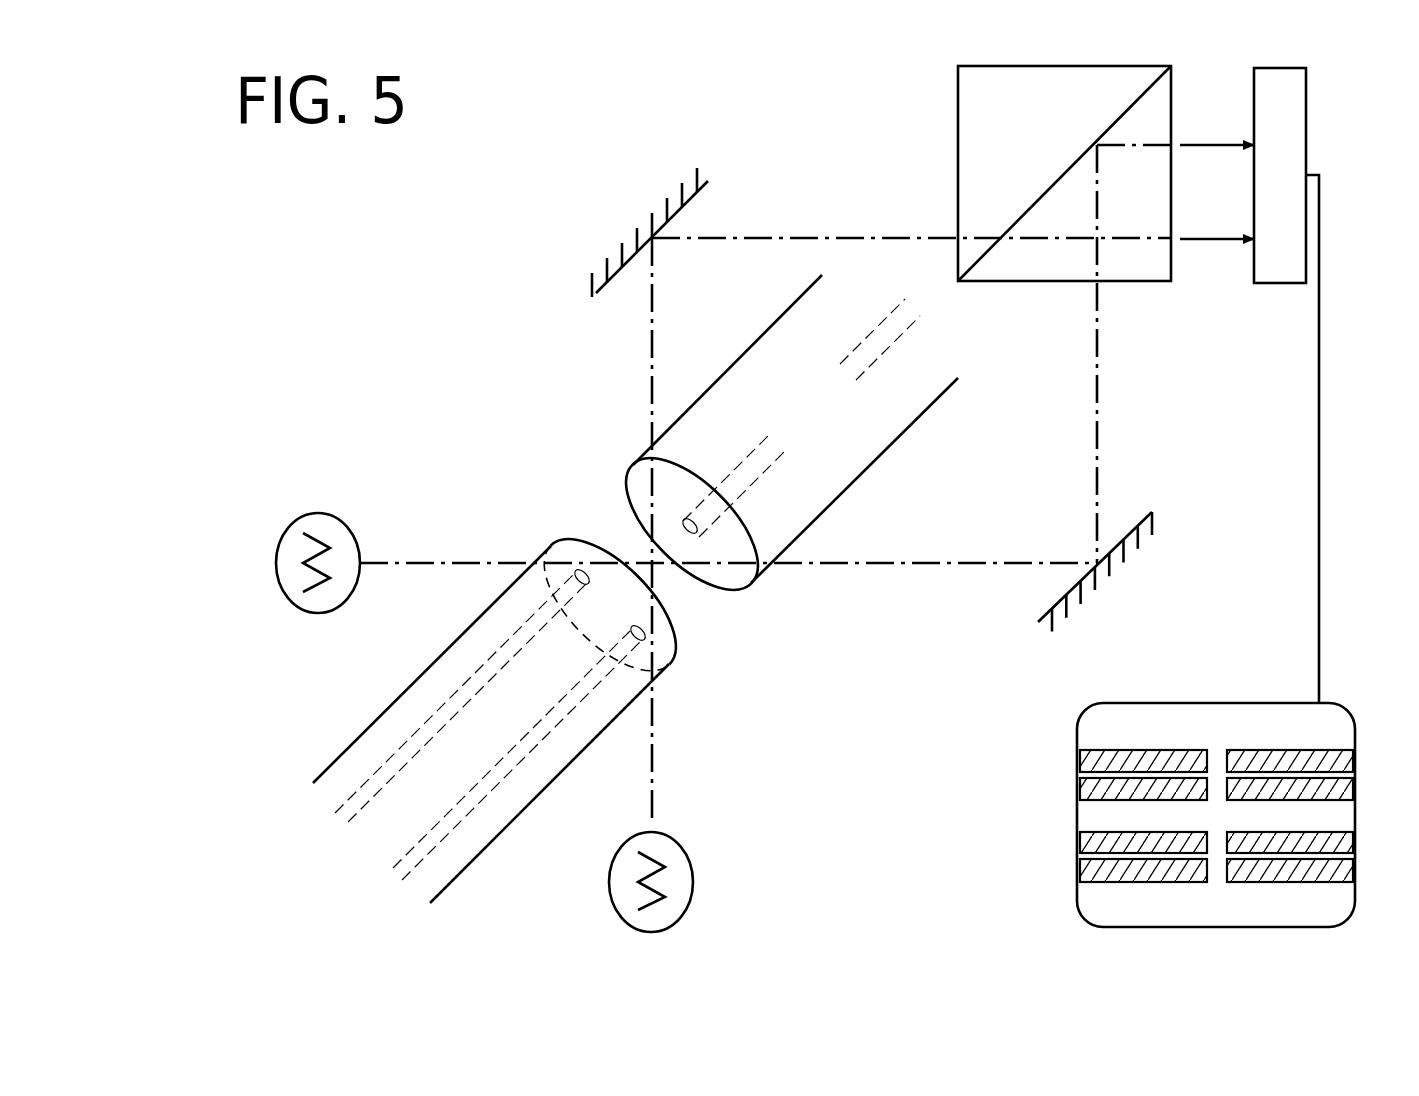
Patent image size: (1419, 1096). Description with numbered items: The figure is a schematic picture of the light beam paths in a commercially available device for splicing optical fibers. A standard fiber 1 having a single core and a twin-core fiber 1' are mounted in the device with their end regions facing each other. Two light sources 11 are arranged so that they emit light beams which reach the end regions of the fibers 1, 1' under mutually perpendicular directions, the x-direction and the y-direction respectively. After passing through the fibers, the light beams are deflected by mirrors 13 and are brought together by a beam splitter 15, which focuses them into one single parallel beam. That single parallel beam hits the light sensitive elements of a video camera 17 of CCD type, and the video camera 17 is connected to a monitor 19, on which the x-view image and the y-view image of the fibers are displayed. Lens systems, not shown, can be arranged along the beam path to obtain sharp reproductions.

The standard fiber 1 is at (781, 443).
The twin-core fiber 1' is at (505, 710).
The light sources 11 is at (348, 548).
The mirrors 13 is at (603, 262).
The beam splitter 15 is at (958, 160).
The video camera 17 is at (1305, 156).
The monitor 19 is at (1228, 710).